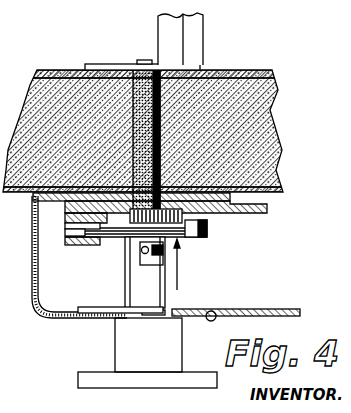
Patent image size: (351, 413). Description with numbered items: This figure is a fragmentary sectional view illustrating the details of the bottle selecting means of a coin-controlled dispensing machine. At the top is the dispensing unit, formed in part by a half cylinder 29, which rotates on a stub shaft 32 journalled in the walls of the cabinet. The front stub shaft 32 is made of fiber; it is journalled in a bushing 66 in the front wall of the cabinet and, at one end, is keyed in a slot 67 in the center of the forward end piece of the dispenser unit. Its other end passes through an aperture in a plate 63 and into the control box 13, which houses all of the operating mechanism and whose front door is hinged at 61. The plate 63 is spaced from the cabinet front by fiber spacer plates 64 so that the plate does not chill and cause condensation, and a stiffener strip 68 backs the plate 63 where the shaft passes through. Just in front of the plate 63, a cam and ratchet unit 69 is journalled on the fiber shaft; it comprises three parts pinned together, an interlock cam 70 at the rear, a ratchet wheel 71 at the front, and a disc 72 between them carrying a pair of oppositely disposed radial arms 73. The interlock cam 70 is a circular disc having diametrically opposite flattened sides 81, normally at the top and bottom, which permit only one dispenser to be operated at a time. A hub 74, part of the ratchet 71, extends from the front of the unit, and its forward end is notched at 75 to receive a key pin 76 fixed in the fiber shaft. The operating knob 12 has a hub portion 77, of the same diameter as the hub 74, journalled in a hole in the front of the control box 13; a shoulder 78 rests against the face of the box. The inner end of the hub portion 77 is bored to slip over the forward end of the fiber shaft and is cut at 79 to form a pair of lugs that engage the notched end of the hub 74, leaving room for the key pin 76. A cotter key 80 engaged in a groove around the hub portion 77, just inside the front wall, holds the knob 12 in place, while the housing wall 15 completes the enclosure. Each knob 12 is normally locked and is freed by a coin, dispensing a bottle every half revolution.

The knob 12 is at (130, 380).
The control box 13 is at (79, 257).
The housing wall 15 is at (60, 318).
The half cylinder 29 is at (193, 35).
The stub shaft 32 is at (140, 95).
The hinge 61 is at (209, 321).
The plate 63 is at (255, 212).
The fiber spacer plate 64 is at (243, 173).
The bushing 66 is at (163, 107).
The slot 67 is at (133, 63).
The stiffener strip 68 is at (230, 200).
The cam and ratchet unit 69 is at (187, 228).
The interlock cam 70 is at (130, 217).
The ratchet wheel 71 is at (183, 233).
The disc 72 is at (127, 237).
The arm 73 is at (90, 232).
The hub 74 is at (127, 280).
The notch 75 is at (208, 228).
The key pin 76 is at (157, 260).
The hub portion 77 is at (192, 311).
The shoulder 78 is at (118, 328).
The cut 79 is at (152, 304).
The cotter key 80 is at (92, 308).
The flattened side 81 is at (95, 245).